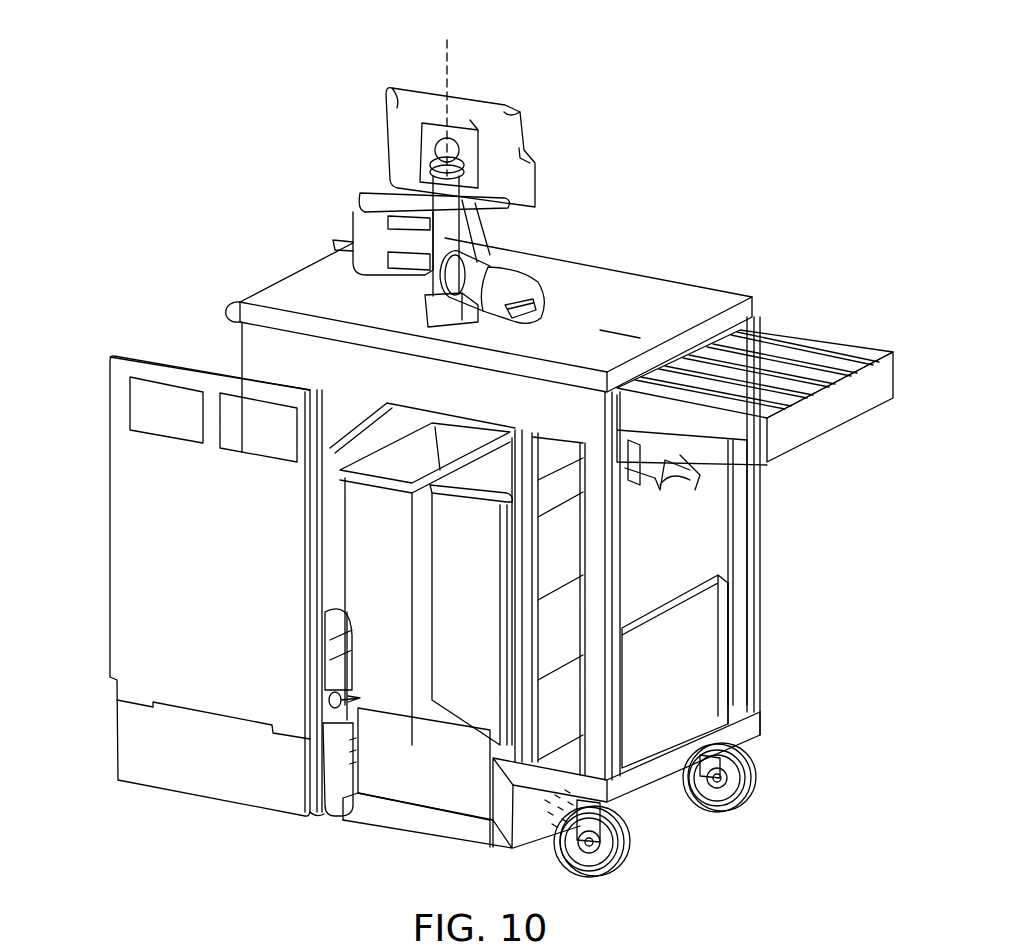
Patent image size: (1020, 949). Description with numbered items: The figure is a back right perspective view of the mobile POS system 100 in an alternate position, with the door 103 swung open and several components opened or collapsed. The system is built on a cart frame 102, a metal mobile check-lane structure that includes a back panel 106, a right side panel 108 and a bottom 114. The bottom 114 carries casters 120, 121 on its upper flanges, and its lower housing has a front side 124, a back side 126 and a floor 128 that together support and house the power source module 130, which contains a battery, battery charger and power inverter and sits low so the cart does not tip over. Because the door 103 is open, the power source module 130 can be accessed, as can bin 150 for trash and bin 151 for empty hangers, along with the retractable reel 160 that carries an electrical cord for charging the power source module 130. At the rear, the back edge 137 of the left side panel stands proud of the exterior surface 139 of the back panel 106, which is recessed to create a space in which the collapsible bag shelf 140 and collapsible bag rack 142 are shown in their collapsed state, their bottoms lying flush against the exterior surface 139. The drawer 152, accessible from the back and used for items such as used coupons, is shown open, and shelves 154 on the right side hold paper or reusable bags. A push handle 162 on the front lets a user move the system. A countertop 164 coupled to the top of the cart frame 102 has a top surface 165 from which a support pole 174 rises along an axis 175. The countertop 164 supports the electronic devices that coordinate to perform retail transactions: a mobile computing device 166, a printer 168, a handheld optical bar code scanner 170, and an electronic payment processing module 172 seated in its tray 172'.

The mobile POS system 100 is at (243, 192).
The cart frame 102 is at (763, 688).
The door 103 is at (132, 585).
The back panel 106 is at (702, 522).
The right side panel 108 is at (277, 368).
The bottom 114 is at (401, 832).
The caster 120 is at (750, 802).
The caster 121 is at (620, 868).
The front side 124 is at (342, 822).
The back side 126 is at (530, 826).
The floor 128 is at (362, 830).
The power source module 130 is at (440, 770).
The back edge 137 is at (752, 637).
The exterior surface 139 is at (712, 548).
The collapsible bag shelf 140 is at (736, 608).
The collapsible bag rack 142 is at (664, 500).
The bin 150 is at (372, 551).
The bin 151 is at (465, 602).
The drawer 152 is at (848, 404).
The shelves 154 is at (573, 598).
The retractable reel 160 is at (320, 655).
The push handle 162 is at (228, 316).
The countertop 164 is at (727, 293).
The top surface 165 is at (668, 306).
The mobile computing device 166 is at (520, 118).
The printer 168 is at (522, 280).
The handheld optical bar code scanner 170 is at (477, 229).
The electronic payment processing module 172 is at (424, 167).
The tray 172' is at (347, 243).
The support pole 174 is at (440, 236).
The axis 175 is at (447, 62).